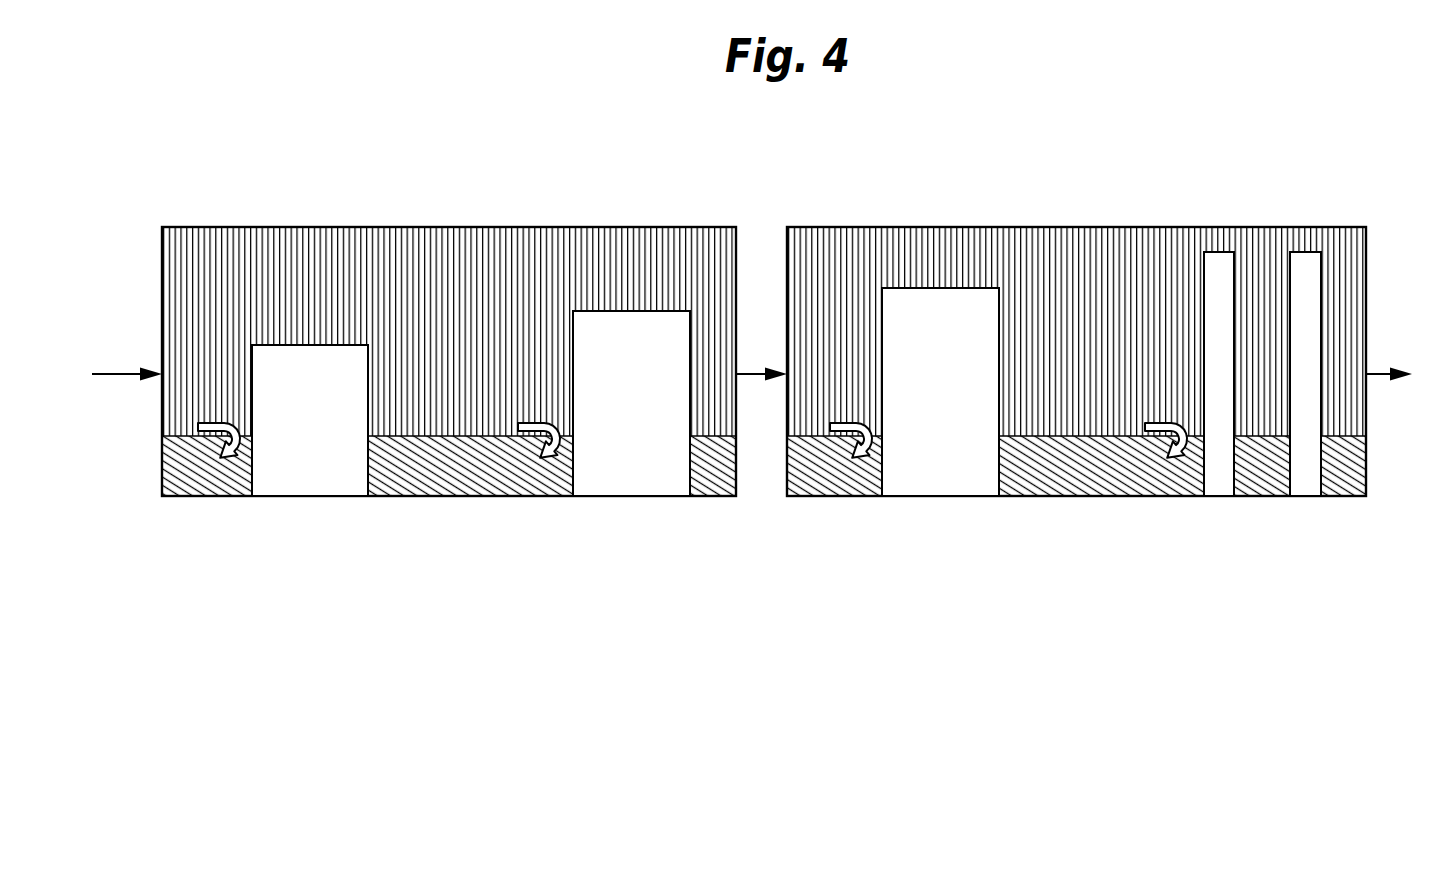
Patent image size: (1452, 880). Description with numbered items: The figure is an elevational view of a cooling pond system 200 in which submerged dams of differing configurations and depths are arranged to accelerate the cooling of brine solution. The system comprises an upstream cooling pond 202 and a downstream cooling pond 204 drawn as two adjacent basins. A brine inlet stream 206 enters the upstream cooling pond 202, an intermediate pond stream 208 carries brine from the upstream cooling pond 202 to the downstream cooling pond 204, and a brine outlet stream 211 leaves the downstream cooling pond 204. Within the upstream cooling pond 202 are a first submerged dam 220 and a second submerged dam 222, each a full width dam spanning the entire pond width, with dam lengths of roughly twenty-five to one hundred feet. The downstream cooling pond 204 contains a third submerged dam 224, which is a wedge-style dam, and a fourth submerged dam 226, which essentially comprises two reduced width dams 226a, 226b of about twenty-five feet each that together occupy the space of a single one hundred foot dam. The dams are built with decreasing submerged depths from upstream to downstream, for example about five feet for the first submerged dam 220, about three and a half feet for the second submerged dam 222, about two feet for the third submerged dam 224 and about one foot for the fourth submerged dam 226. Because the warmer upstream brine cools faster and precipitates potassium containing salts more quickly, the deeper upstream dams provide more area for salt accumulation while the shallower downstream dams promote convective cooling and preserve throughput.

The cooling pond system 200 is at (857, 125).
The upstream cooling pond 202 is at (402, 227).
The downstream cooling pond 204 is at (1068, 227).
The brine inlet stream 206 is at (123, 361).
The intermediate pond stream 208 is at (757, 372).
The brine outlet stream 211 is at (1409, 362).
The first submerged dam 220 is at (318, 475).
The second submerged dam 222 is at (627, 480).
The third submerged dam 224 is at (930, 473).
The fourth submerged dam 226 is at (1338, 505).
The reduced width dam 226a is at (1221, 263).
The reduced width dam 226b is at (1306, 270).